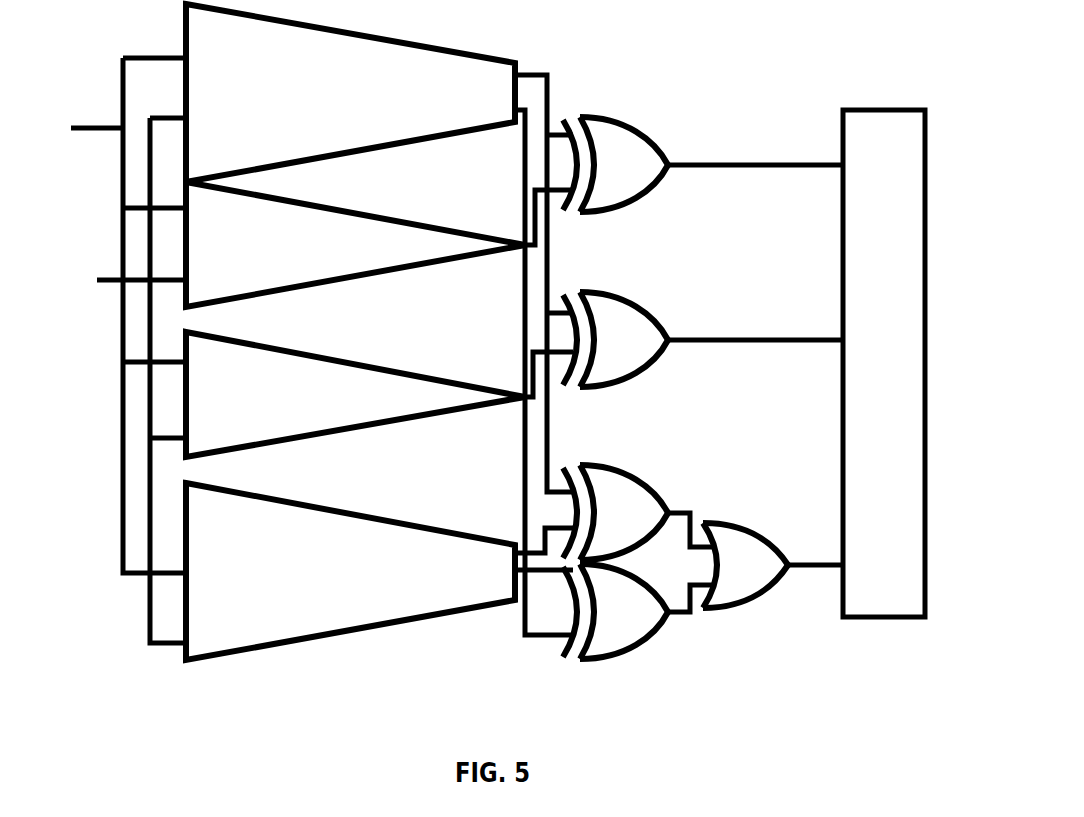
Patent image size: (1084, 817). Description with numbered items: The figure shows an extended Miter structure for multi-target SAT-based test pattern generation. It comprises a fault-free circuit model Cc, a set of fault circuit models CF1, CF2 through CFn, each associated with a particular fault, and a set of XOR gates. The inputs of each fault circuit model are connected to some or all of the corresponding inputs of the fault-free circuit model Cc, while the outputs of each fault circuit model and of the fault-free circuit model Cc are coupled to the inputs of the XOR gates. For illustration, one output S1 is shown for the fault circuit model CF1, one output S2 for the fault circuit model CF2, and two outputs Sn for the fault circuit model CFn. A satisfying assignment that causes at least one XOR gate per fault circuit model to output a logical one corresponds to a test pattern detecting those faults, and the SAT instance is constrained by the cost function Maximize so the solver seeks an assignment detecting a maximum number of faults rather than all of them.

The fault-free circuit model Cc is at (350, 93).
The fault circuit model CF1 is at (355, 244).
The fault circuit model CF2 is at (355, 394).
The fault circuit model CFn is at (350, 571).
The output S1 is at (755, 151).
The output S2 is at (755, 327).
The output Sn is at (815, 549).
The cost function Maximize is at (884, 363).